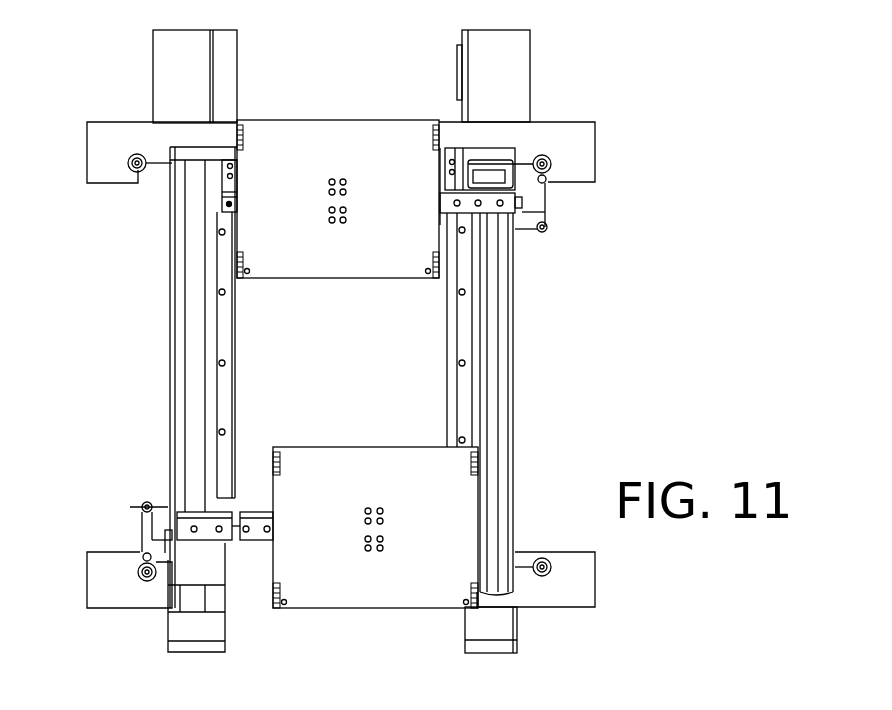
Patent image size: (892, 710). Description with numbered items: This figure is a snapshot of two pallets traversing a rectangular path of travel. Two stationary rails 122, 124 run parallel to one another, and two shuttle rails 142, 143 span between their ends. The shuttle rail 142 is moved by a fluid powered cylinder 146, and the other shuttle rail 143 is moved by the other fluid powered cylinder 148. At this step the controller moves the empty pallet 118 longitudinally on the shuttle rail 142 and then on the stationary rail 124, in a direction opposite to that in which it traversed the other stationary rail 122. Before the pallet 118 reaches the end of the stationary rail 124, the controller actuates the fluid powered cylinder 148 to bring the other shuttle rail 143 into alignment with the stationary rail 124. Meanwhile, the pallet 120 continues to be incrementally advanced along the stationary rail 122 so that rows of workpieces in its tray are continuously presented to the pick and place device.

The pallet 118 is at (297, 120).
The pallet 120 is at (318, 608).
The stationary rail 122 is at (258, 512).
The stationary rail 124 is at (228, 218).
The shuttle rail 142 is at (515, 229).
The shuttle rail 143 is at (195, 512).
The fluid powered cylinder 146 is at (515, 435).
The fluid powered cylinder 148 is at (170, 290).